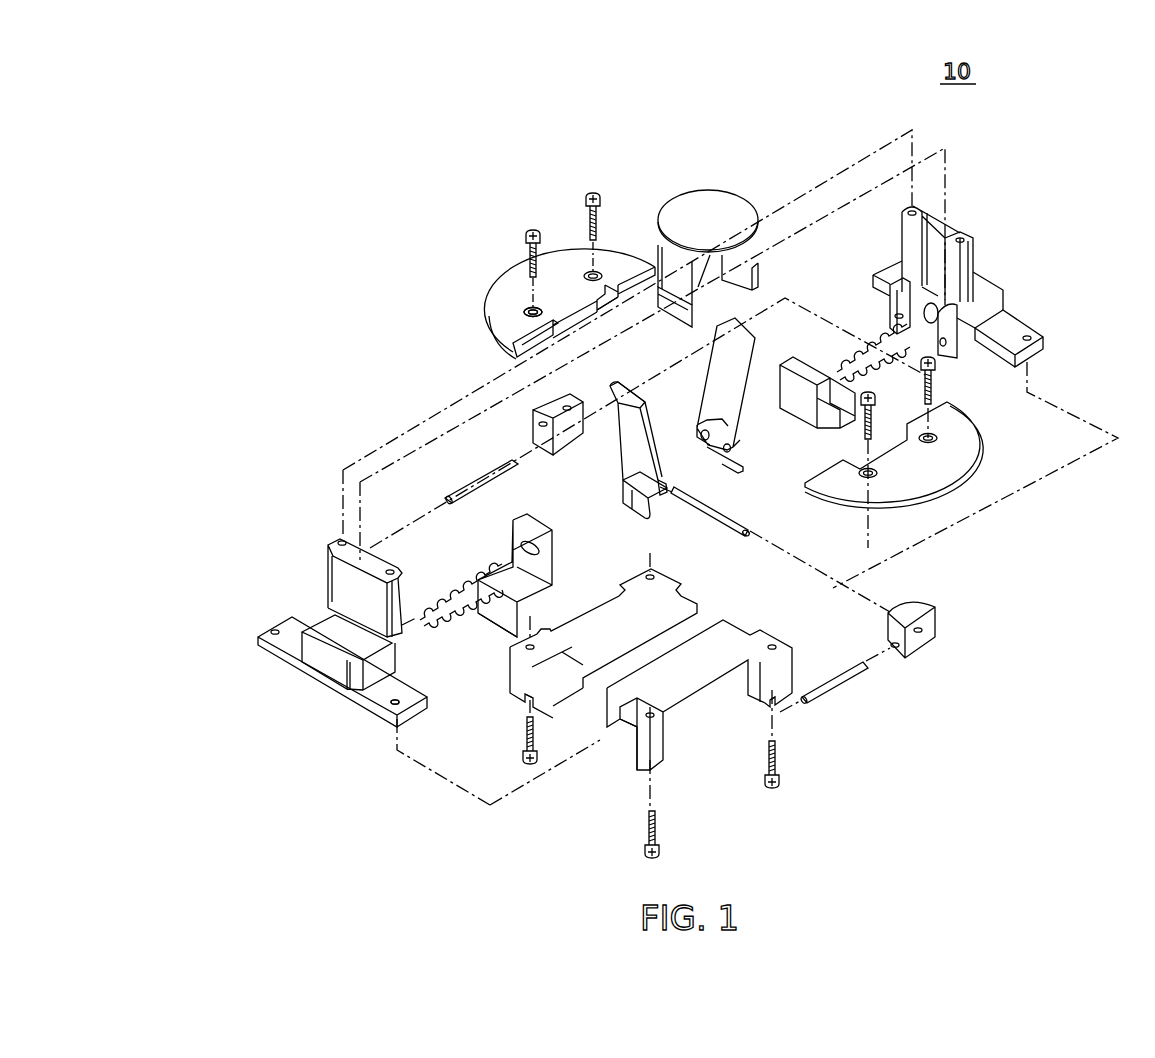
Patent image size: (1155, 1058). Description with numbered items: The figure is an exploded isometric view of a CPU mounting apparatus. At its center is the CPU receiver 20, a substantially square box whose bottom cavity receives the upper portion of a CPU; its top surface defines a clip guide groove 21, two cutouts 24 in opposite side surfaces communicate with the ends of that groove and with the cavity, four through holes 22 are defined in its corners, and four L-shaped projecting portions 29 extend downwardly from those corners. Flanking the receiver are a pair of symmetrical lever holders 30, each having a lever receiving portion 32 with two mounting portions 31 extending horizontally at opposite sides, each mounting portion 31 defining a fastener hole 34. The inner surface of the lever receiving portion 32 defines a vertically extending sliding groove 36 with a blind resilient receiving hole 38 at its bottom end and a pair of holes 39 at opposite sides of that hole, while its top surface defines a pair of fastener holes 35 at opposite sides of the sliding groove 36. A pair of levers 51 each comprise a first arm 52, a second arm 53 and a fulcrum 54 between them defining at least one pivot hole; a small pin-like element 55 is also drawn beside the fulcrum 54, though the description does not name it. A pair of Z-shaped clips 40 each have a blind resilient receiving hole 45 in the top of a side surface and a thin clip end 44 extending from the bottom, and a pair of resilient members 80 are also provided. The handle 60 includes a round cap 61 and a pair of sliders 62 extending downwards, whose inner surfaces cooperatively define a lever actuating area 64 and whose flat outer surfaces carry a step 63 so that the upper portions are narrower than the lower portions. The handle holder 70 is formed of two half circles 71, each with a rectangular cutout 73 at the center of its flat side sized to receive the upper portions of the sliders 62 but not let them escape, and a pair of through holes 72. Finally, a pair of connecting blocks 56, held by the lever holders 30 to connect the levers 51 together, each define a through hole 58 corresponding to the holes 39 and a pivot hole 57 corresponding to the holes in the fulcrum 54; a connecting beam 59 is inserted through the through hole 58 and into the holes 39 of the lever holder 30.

The CPU receiver 20 is at (651, 705).
The clip guide groove 21 is at (685, 635).
The through holes 22 is at (640, 725).
The cutouts 24 is at (590, 698).
The projecting portions 29 is at (660, 750).
The lever holders 30 is at (282, 583).
The mounting portions 31 is at (290, 643).
The lever receiving portion 32 is at (340, 645).
The fastener hole 34 is at (393, 715).
The fastener holes 35 is at (327, 542).
The sliding groove 36 is at (940, 240).
The resilient receiving hole 38 is at (935, 303).
The holes 39 is at (946, 335).
The clips 40 is at (520, 537).
The clip end 44 is at (512, 638).
The resilient receiving hole 45 is at (535, 553).
The levers 51 is at (632, 445).
The first arm 52 is at (622, 388).
The second arm 53 is at (641, 505).
The fulcrum 54 is at (663, 492).
The pivot pin 55 is at (722, 518).
The connecting blocks 56 is at (934, 640).
The pivot hole 57 is at (920, 638).
The through hole 58 is at (895, 640).
The connecting beam 59 is at (838, 680).
The handle 60 is at (728, 217).
The round cap 61 is at (690, 200).
The sliders 62 is at (672, 258).
The step 63 is at (690, 310).
The lever actuating area 64 is at (770, 262).
The handle holder 70 is at (524, 282).
The half circles 71 is at (574, 258).
The through holes 72 is at (527, 310).
The rectangular cutout 73 is at (498, 338).
The resilient members 80 is at (843, 363).